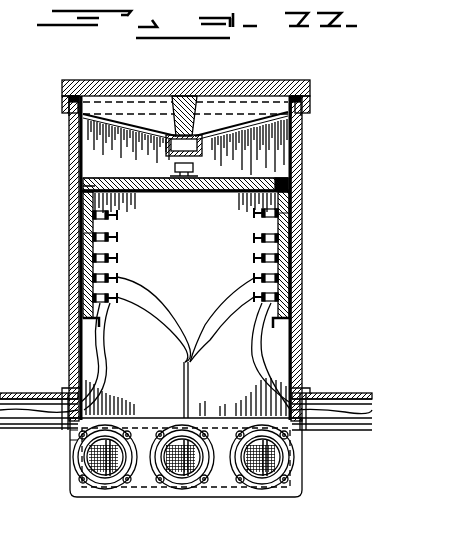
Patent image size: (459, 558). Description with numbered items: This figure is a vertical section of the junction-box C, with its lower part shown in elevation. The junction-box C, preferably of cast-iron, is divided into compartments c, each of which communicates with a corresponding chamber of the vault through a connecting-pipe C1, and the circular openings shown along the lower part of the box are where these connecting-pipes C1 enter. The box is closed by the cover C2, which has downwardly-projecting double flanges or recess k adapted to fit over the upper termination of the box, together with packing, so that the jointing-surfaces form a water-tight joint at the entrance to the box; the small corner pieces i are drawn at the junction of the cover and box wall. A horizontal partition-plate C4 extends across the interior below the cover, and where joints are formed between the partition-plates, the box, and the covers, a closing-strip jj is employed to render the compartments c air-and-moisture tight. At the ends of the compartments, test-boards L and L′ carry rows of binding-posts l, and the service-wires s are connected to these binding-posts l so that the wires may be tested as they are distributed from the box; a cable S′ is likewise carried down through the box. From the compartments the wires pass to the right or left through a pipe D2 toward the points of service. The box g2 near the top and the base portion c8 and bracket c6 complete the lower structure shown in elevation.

The cover C2 is at (186, 84).
The corner piece i is at (67, 97).
The downwardly-projecting double flanges or recess k is at (70, 112).
The box g2 is at (203, 146).
The partition shelf C4 is at (240, 183).
The closing-strip jj is at (80, 191).
The binding-posts l is at (119, 216).
The test-board L is at (110, 237).
The terminal board L′ is at (258, 208).
The junction-box C is at (302, 270).
The compartments c is at (186, 255).
The bracket c6 is at (280, 336).
The service-wires s is at (162, 307).
The wire S′ is at (190, 372).
The base box c8 is at (318, 446).
The pipe D2 is at (348, 394).
The connecting-pipe C1 is at (264, 470).